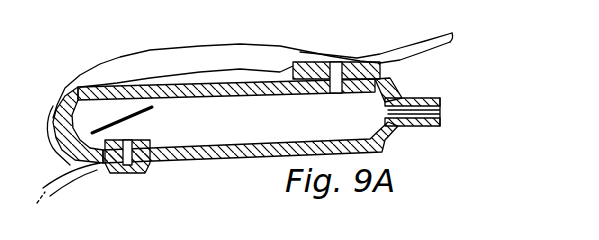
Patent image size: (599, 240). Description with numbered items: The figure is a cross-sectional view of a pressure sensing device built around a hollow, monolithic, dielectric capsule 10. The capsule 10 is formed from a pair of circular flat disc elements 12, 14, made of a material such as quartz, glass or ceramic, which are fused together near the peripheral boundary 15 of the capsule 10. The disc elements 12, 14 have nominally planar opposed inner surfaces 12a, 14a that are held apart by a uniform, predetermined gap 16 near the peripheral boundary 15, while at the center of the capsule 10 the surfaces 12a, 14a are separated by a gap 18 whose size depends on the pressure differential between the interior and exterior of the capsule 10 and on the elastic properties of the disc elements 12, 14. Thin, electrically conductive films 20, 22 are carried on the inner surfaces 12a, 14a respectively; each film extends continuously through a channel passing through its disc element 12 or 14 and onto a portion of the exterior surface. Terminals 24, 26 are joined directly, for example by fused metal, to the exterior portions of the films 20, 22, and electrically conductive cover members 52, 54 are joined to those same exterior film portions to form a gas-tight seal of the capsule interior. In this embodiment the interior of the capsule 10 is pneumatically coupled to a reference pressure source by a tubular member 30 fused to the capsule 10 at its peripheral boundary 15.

The capsule 10 is at (118, 80).
The disc element 12 is at (222, 83).
The inner surface 12a is at (124, 120).
The disc element 14 is at (236, 157).
The inner surface 14a is at (325, 137).
The peripheral boundary 15 is at (54, 126).
The gap 16 is at (85, 142).
The gap 18 is at (160, 116).
The electrically conductive film 20 is at (231, 99).
The electrically conductive film 22 is at (252, 140).
The terminal 24 is at (388, 60).
The terminal 26 is at (50, 192).
The tubular member 30 is at (407, 108).
The electrically conductive cover member 52 is at (313, 63).
The electrically conductive cover member 54 is at (150, 172).